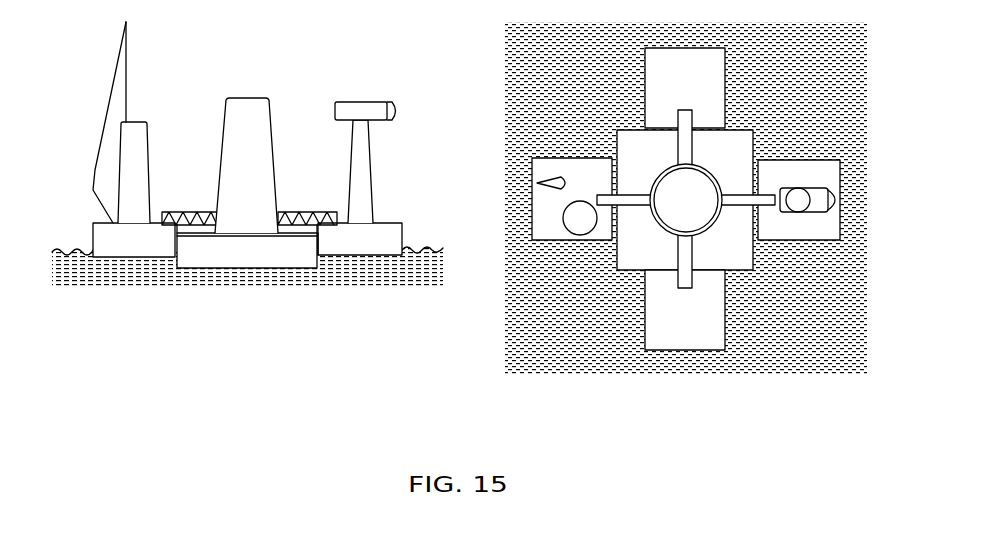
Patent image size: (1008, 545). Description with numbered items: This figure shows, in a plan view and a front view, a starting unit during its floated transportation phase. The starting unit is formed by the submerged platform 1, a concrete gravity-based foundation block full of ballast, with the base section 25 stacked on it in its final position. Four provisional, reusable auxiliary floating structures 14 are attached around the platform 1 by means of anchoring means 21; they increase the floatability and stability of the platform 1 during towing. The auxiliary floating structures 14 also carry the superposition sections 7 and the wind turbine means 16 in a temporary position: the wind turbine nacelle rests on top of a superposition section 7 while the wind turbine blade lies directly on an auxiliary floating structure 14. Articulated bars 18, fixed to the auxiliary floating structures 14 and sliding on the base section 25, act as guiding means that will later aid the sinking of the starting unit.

The submerged platform 1 is at (235, 270).
The superposition section 7 is at (150, 172).
The auxiliary floating structure 14 is at (132, 257).
The wind turbine means 16 is at (127, 93).
The articulated bar 18 is at (303, 213).
The anchoring means 21 is at (320, 237).
The base section 25 is at (272, 143).